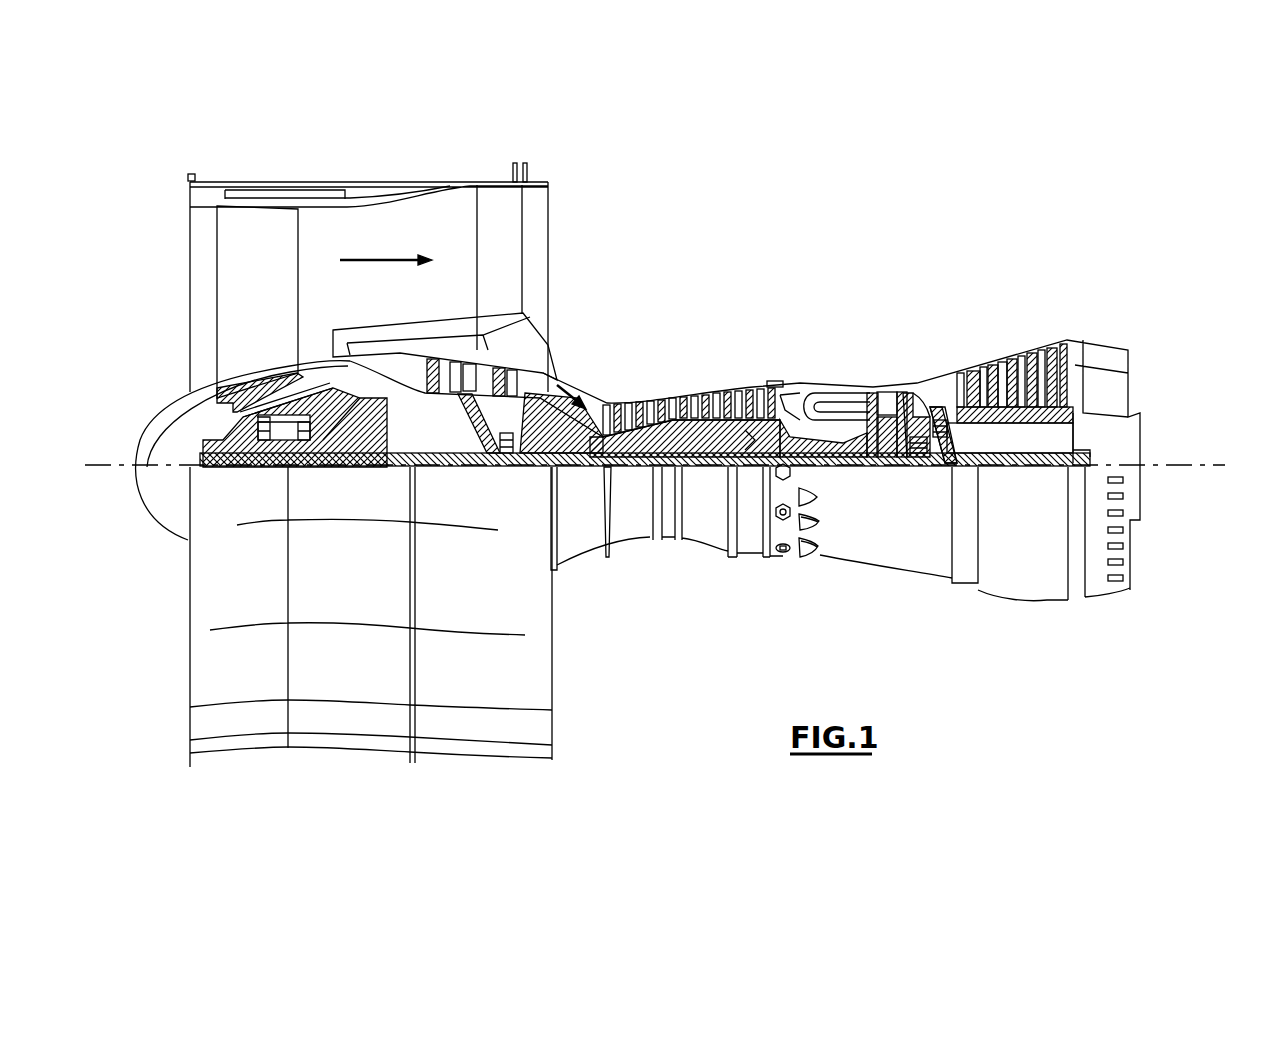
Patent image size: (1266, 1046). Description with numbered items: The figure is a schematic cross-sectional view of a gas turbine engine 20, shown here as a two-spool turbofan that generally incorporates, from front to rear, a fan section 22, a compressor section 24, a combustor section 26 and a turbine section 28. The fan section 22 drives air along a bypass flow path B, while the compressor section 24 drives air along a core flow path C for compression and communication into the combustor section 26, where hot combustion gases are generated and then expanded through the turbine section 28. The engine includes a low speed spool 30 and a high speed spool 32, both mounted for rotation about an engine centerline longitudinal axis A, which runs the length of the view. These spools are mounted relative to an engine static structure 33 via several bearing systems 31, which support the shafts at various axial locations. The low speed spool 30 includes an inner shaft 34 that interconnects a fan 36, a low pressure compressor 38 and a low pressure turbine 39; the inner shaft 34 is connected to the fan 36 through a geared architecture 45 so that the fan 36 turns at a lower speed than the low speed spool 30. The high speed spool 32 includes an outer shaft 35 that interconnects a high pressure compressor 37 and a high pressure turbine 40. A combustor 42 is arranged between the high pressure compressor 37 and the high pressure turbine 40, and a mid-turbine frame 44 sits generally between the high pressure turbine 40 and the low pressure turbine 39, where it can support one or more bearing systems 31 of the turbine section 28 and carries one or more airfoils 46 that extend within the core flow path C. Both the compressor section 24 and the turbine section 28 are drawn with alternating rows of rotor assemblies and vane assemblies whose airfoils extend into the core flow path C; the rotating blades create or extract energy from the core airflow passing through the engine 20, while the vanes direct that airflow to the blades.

The gas turbine engine 20 is at (832, 231).
The fan section 22 is at (298, 170).
The compressor section 24 is at (541, 364).
The combustor section 26 is at (831, 380).
The turbine section 28 is at (1052, 342).
The low speed spool 30 is at (707, 483).
The bearing systems 31 is at (290, 465).
The high speed spool 32 is at (750, 425).
The engine static structure 33 is at (749, 568).
The inner shaft 34 is at (568, 470).
The outer shaft 35 is at (836, 455).
The fan 36 is at (272, 314).
The high pressure compressor 37 is at (683, 425).
The low pressure compressor 38 is at (528, 322).
The low pressure turbine 39 is at (1019, 360).
The high pressure turbine 40 is at (892, 383).
The combustor 42 is at (826, 405).
The mid-turbine frame 44 is at (935, 372).
The geared architecture 45 is at (372, 455).
The airfoils 46 is at (935, 405).
The engine centerline longitudinal axis A is at (1220, 466).
The bypass flow path B is at (370, 261).
The core flow path C is at (578, 400).